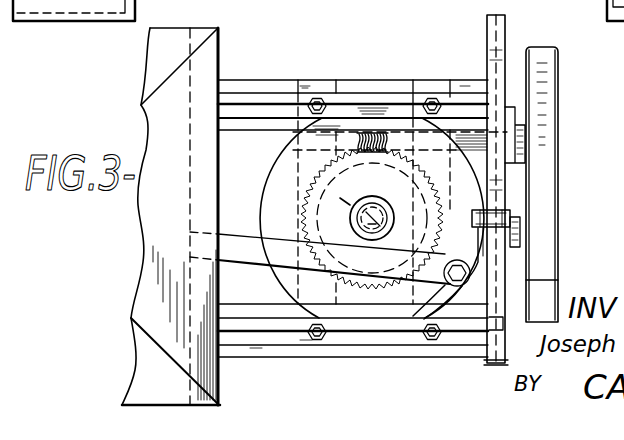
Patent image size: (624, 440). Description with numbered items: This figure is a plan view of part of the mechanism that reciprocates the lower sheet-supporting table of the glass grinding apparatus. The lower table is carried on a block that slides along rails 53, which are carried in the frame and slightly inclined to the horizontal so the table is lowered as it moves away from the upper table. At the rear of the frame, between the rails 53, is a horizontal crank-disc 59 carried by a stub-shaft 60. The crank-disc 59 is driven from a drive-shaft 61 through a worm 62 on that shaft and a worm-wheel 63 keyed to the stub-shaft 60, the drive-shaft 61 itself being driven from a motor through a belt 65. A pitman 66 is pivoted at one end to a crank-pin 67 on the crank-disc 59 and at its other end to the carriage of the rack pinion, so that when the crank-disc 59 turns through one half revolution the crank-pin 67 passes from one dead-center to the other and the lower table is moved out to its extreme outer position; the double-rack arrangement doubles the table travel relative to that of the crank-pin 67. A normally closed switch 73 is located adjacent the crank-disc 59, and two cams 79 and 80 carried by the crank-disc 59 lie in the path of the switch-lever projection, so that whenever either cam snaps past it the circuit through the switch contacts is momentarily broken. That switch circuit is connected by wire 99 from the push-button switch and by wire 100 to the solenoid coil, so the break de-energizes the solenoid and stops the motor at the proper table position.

The rails 53 is at (237, 106).
The crank-disc 59 is at (276, 206).
The stub-shaft 60 is at (352, 219).
The drive-shaft 61 is at (473, 130).
The worm 62 is at (375, 133).
The worm-wheel 63 is at (290, 186).
The belt 65 is at (536, 47).
The pitman 66 is at (265, 253).
The crank-pin 67 is at (453, 280).
The switch 73 is at (503, 208).
The cam 79 is at (347, 202).
The cam 80 is at (469, 279).
The wire 99 is at (521, 244).
The wire 100 is at (477, 256).